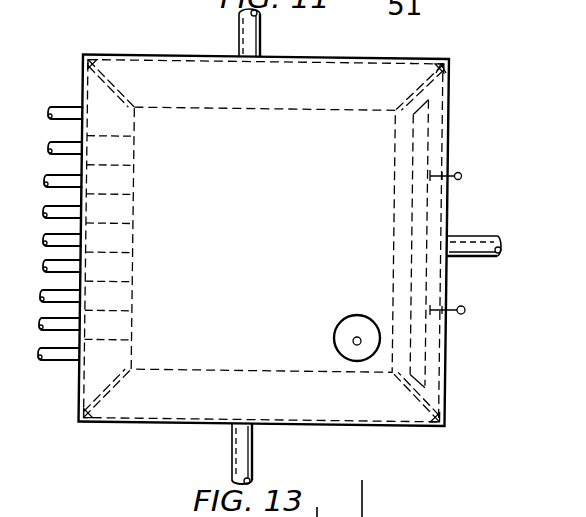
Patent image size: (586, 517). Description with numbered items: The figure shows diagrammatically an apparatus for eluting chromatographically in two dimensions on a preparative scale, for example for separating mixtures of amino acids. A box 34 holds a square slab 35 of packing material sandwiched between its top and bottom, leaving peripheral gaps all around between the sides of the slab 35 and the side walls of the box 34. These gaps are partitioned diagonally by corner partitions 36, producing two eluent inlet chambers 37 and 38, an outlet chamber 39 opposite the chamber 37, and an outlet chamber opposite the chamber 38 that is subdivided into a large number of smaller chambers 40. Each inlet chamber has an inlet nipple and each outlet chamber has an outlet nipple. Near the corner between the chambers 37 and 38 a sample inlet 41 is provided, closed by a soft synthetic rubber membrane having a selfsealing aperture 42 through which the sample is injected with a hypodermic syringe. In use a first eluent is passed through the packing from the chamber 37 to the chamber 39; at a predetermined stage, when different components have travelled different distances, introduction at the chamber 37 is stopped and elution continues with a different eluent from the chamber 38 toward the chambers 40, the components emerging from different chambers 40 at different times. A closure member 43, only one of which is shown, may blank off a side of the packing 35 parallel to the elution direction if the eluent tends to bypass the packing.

The box 34 is at (355, 62).
The square slab of packing material 35 is at (173, 107).
The corner partitions 36 is at (99, 53).
The eluent inlet chamber 37 is at (352, 410).
The eluent inlet chamber 38 is at (403, 225).
The outlet chamber 39 is at (404, 78).
The smaller chambers 40 is at (86, 238).
The sample inlet 41 is at (352, 326).
The selfsealing aperture 42 is at (353, 340).
The closure member 43 is at (422, 161).